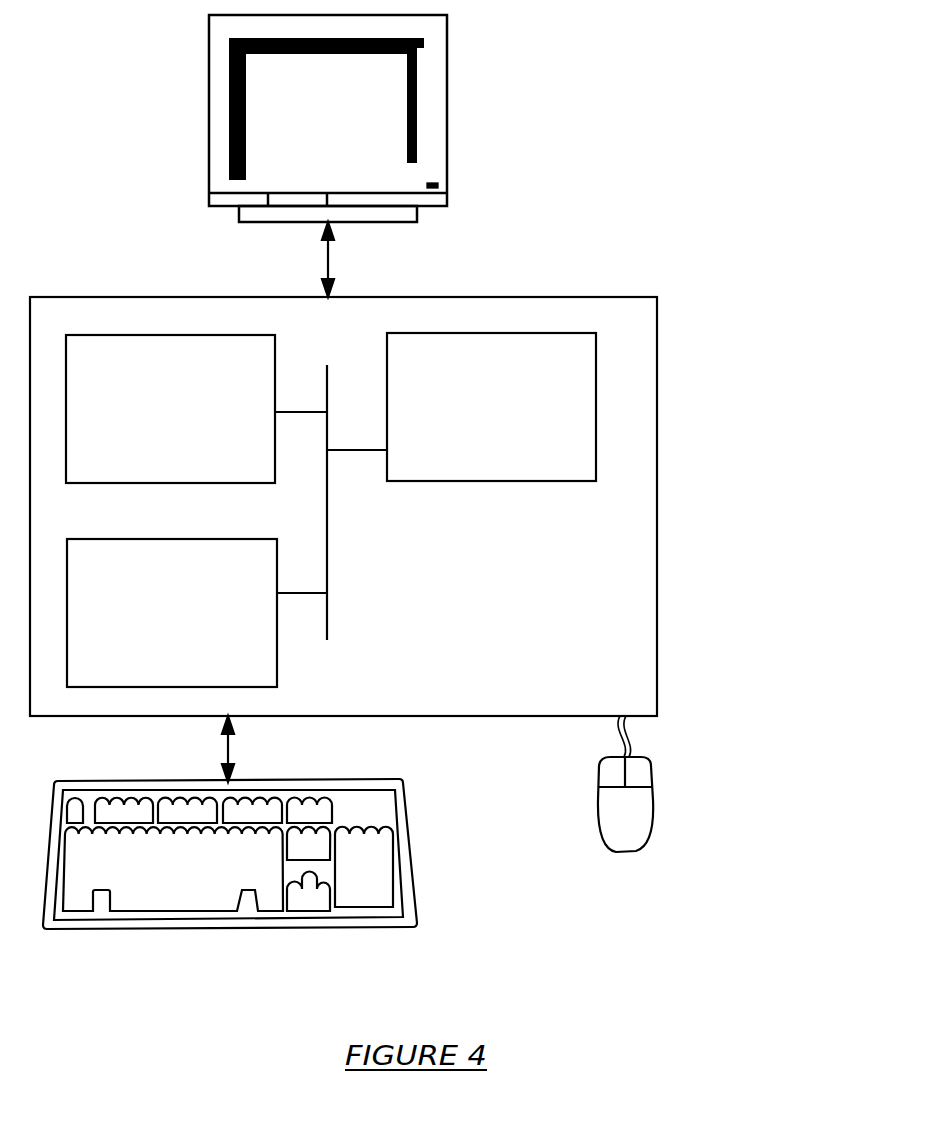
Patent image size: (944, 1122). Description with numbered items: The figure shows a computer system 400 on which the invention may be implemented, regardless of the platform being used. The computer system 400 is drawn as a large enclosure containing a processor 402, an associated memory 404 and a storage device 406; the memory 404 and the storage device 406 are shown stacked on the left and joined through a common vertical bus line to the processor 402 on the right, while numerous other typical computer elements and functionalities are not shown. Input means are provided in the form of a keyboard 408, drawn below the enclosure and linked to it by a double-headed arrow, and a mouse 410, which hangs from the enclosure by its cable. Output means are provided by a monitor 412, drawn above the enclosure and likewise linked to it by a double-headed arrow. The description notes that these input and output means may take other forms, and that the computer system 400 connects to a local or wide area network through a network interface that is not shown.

The computer system 400 is at (665, 160).
The processor 402 is at (472, 430).
The memory 404 is at (150, 432).
The storage device 406 is at (151, 637).
The keyboard 408 is at (158, 897).
The mouse 410 is at (606, 829).
The monitor 412 is at (308, 136).